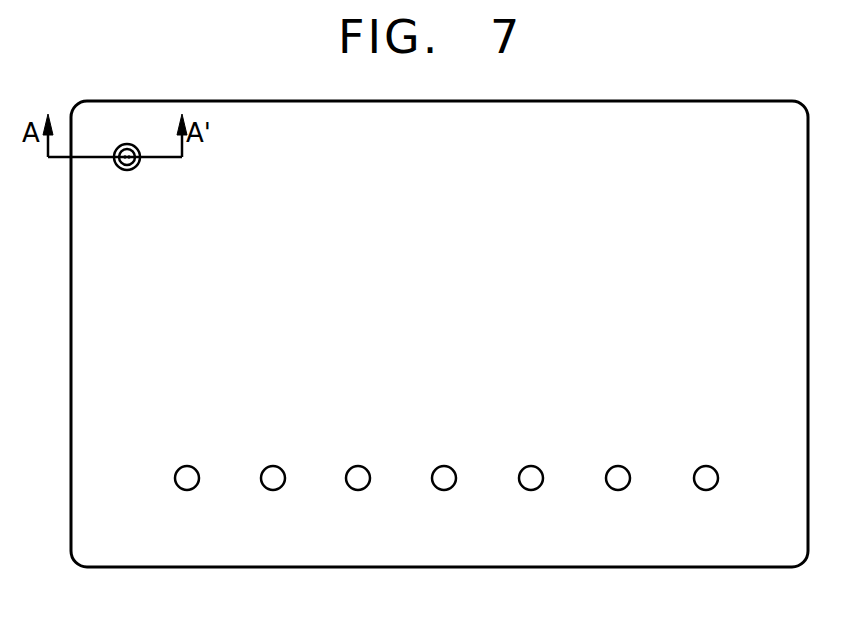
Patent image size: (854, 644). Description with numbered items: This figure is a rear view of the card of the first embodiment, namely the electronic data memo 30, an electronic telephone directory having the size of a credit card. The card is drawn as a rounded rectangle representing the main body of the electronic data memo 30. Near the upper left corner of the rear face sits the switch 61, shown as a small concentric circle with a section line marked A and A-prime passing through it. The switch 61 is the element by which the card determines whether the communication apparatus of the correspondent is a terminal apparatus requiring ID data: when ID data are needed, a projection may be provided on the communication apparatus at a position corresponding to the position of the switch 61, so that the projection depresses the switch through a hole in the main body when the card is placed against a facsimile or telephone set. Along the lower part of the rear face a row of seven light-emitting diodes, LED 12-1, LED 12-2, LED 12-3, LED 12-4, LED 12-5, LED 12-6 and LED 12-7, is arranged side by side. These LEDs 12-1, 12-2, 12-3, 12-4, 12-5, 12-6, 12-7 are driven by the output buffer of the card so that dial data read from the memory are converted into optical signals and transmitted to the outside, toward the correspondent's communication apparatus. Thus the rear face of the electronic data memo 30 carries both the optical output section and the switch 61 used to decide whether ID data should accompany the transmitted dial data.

The electronic data memo 30 is at (698, 568).
The switch 61 is at (130, 170).
The LED 12-1 is at (188, 466).
The LED 12-2 is at (277, 466).
The LED 12-3 is at (362, 466).
The LED 12-4 is at (449, 466).
The LED 12-5 is at (536, 466).
The LED 12-6 is at (622, 466).
The LED 12-7 is at (707, 466).